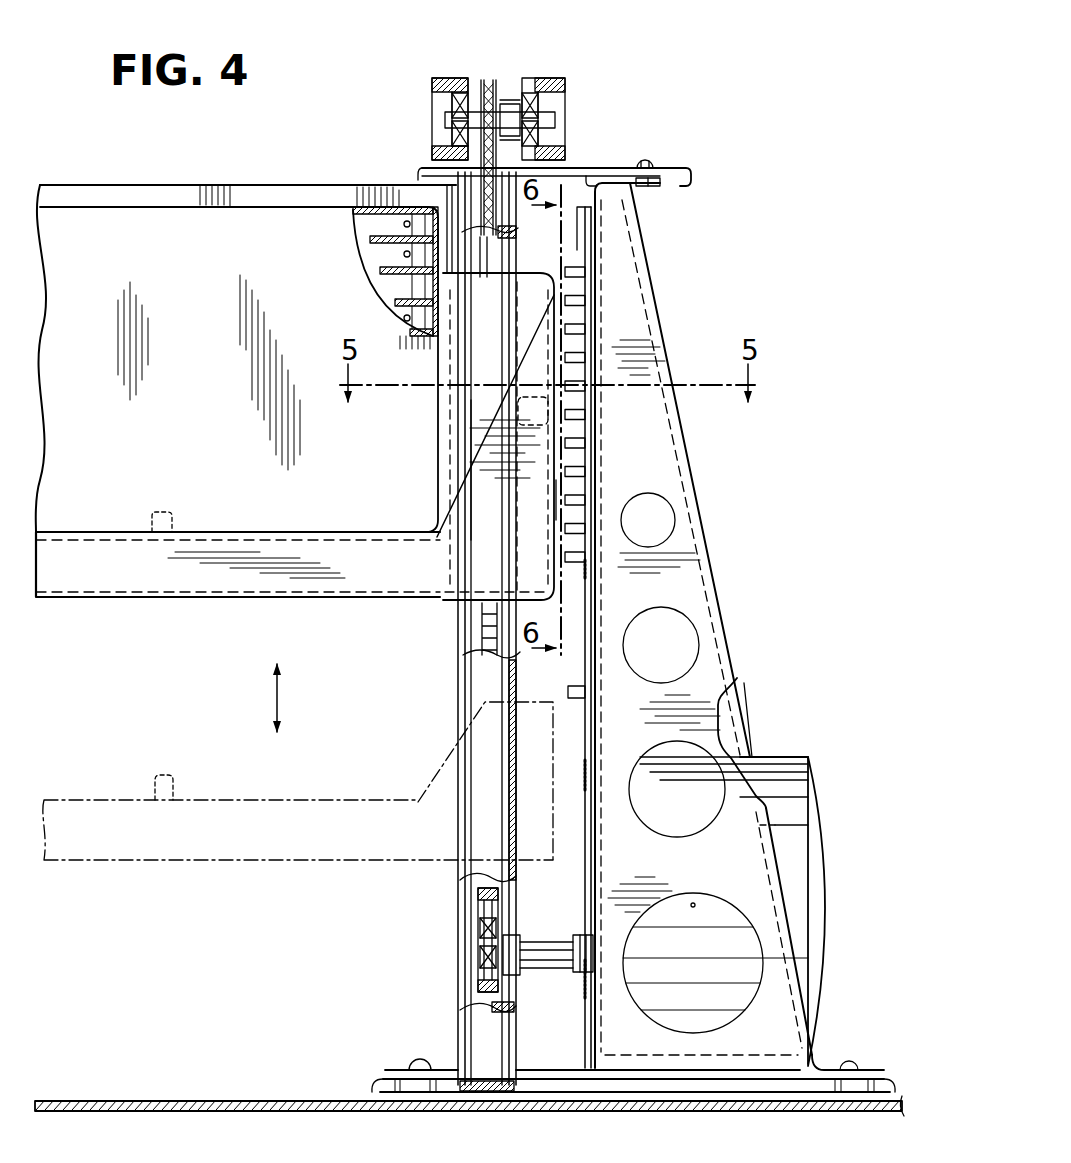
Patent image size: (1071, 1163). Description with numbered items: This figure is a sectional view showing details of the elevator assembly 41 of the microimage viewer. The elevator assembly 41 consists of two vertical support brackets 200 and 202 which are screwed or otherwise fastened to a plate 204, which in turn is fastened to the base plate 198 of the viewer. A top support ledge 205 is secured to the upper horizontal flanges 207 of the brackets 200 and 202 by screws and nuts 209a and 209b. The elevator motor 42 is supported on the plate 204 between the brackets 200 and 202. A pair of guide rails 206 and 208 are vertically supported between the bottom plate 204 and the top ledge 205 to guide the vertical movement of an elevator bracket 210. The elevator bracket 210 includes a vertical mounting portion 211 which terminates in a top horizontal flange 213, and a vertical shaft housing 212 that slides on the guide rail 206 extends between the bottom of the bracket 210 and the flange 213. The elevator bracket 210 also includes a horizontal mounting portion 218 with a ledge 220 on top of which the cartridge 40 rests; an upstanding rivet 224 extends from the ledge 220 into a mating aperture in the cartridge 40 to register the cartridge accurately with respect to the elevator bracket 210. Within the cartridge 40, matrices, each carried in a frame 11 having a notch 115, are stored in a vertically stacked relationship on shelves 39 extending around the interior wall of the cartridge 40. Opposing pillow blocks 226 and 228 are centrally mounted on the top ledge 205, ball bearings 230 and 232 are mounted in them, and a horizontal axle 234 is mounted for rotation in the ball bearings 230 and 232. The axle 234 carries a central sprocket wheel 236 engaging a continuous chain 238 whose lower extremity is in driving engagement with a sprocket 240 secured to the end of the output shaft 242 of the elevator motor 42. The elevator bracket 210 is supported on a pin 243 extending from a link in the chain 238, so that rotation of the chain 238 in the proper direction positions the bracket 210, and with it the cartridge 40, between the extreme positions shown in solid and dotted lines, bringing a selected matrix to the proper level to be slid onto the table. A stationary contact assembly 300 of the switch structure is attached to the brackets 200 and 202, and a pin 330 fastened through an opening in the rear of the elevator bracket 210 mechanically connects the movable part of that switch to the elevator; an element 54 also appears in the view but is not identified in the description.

The frame 11 is at (368, 228).
The shelves 39 is at (400, 269).
The cartridge 40 is at (207, 382).
The elevator assembly 41 is at (680, 287).
The elevator motor 42 is at (768, 765).
The guide slot 54 is at (552, 499).
The notch 115 is at (420, 212).
The base plate 198 is at (655, 1111).
The vertical support bracket 200 is at (718, 566).
The vertical support bracket 202 is at (734, 713).
The plate 204 is at (552, 1080).
The top support ledge 205 is at (690, 178).
The guide rail 206 is at (471, 256).
The upper horizontal flange 207 is at (668, 184).
The guide rail 208 is at (465, 640).
The screws and nuts 209a is at (655, 158).
The screws and nuts 209b is at (657, 188).
The elevator bracket 210 is at (314, 606).
The vertical mounting portion 211 is at (471, 466).
The vertical shaft housing 212 is at (470, 370).
The top horizontal flange 213 is at (498, 270).
The horizontal mounting portion 218 is at (122, 578).
The ledge 220 is at (234, 538).
The upstanding rivet 224 is at (152, 514).
The pillow block 226 is at (432, 92).
The pillow block 228 is at (565, 100).
The ball bearing 230 is at (455, 78).
The ball bearing 232 is at (540, 80).
The horizontal axle 234 is at (445, 120).
The central sprocket wheel 236 is at (494, 82).
The continuous chain 238 is at (480, 905).
The sprocket 240 is at (484, 948).
The output shaft 242 is at (537, 960).
The pin 243 is at (465, 607).
The stationary contact assembly 300 is at (590, 595).
The pin 330 is at (518, 416).